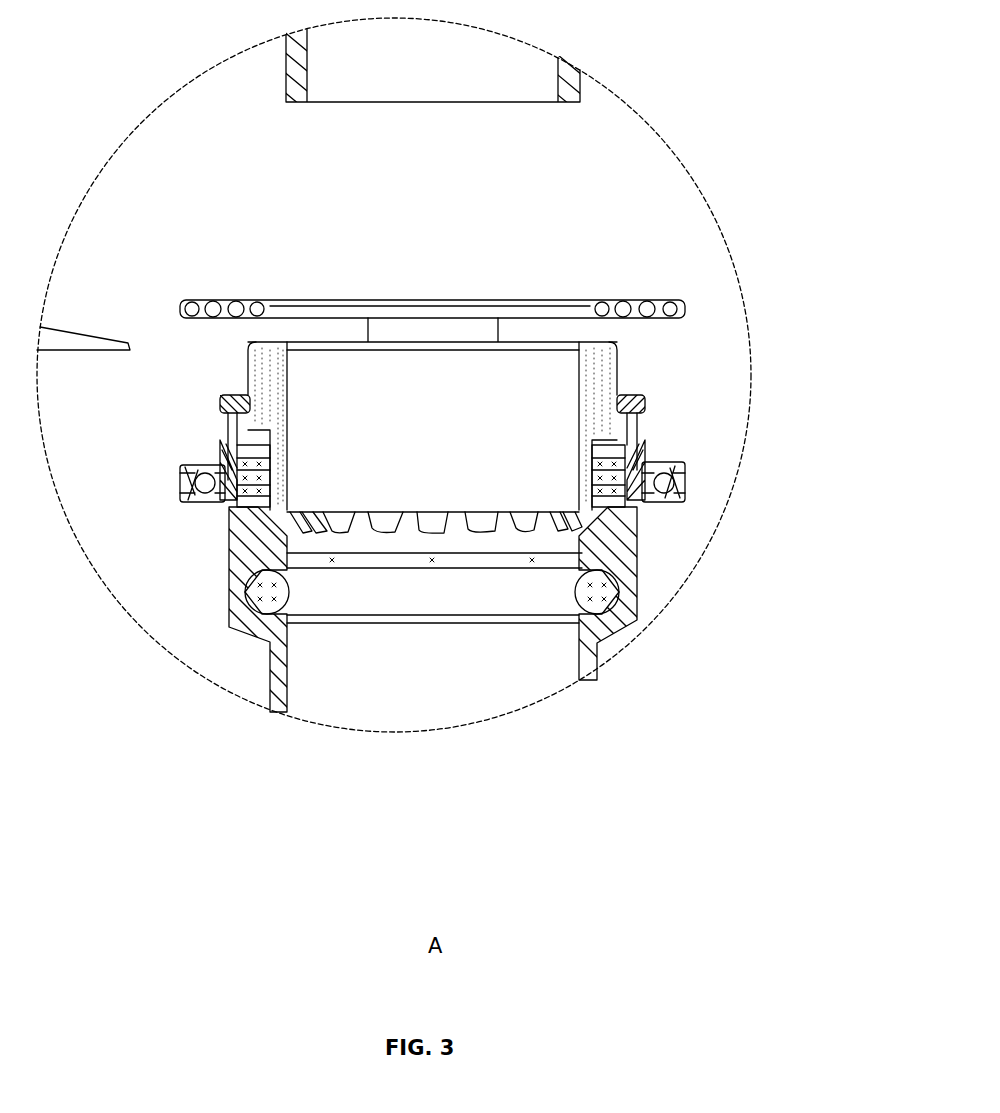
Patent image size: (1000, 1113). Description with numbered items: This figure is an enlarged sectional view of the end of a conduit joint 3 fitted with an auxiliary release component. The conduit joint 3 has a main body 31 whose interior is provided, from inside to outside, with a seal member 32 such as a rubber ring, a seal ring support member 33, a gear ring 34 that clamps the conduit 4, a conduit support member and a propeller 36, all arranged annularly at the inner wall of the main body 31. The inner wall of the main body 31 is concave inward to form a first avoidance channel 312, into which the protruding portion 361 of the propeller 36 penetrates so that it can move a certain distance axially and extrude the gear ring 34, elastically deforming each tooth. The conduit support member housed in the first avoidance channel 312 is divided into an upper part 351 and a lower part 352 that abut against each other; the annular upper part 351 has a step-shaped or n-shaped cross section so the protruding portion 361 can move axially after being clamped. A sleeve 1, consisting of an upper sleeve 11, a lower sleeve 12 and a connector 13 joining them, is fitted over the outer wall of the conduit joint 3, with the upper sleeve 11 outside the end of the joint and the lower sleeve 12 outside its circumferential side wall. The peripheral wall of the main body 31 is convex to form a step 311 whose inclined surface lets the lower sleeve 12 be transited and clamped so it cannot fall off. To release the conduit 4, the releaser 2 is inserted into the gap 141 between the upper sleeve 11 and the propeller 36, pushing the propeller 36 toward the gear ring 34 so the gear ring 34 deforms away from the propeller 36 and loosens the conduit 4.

The sleeve 1 is at (616, 298).
The releaser 2 is at (70, 340).
The conduit joint 3 is at (600, 647).
The conduit 4 is at (580, 92).
The upper sleeve 11 is at (690, 311).
The lower sleeve 12 is at (687, 483).
The connector 13 is at (470, 325).
The main body 31 is at (640, 616).
The seal member 32 is at (618, 581).
The seal ring support member 33 is at (600, 544).
The gear ring 34 is at (432, 520).
The propeller 36 is at (600, 387).
The gap 141 is at (240, 335).
The step 311 is at (648, 462).
The first avoidance channel 312 is at (228, 431).
The upper part 351 is at (236, 446).
The lower part 352 is at (190, 492).
The protruding portion 361 is at (640, 423).